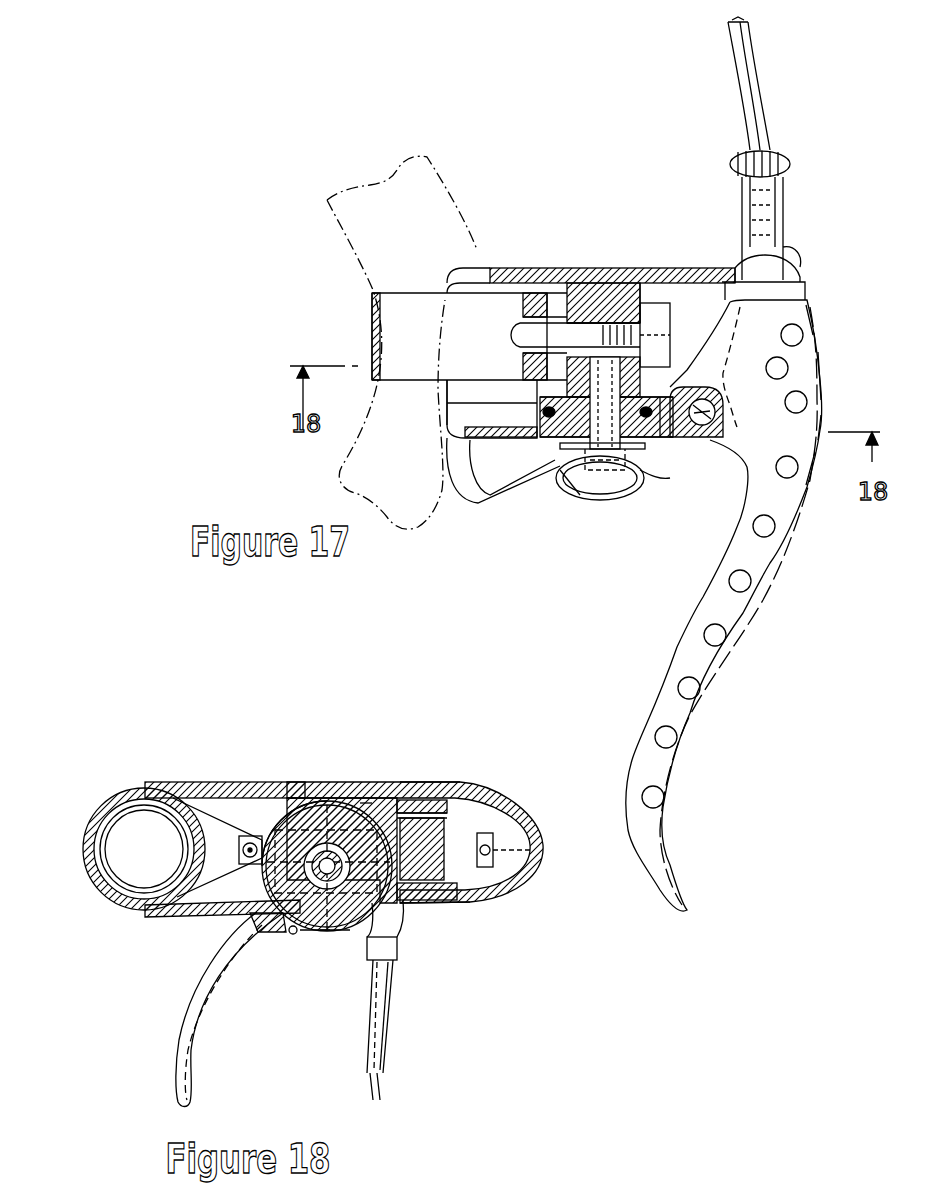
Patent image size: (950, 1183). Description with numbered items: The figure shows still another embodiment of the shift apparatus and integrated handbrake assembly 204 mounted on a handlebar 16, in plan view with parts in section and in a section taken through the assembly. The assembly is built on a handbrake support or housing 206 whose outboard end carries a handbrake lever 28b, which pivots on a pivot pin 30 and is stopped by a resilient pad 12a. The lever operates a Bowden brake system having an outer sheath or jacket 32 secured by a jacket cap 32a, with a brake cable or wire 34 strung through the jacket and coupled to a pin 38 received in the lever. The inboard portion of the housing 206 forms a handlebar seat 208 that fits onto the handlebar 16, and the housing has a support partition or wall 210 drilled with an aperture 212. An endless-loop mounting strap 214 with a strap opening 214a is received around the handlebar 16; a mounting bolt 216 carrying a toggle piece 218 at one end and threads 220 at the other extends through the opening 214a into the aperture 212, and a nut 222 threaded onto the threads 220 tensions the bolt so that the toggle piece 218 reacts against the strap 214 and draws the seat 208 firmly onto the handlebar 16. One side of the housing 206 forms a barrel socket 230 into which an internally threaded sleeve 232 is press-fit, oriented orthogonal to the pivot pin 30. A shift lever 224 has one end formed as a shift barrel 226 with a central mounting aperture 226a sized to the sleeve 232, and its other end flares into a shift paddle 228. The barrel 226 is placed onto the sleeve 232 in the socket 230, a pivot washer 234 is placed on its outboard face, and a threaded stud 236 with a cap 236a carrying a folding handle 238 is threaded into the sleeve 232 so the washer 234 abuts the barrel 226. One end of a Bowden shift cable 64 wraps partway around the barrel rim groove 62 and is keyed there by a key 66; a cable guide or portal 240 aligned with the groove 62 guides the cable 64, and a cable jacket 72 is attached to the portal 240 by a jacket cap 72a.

In FIG. 17, the handlebar 16 is at (446, 188).
In FIG. 18, the handlebar 16 is at (118, 798).
In FIG. 17, the mounting strap 214 is at (372, 312).
In FIG. 18, the mounting strap 214 is at (88, 840).
In FIG. 17, the strap opening 214a is at (512, 335).
In FIG. 17, the internally threaded sleeve 232 is at (540, 364).
In FIG. 18, the internally threaded sleeve 232 is at (330, 848).
In FIG. 17, the threads 220 is at (655, 326).
In FIG. 17, the handbrake support or housing 206 is at (540, 268).
In FIG. 18, the handbrake support or housing 206 is at (248, 784).
In FIG. 17, the handlebar seat 208 is at (482, 270).
In FIG. 18, the handlebar seat 208 is at (163, 784).
In FIG. 17, the mounting bolt 216 is at (535, 298).
In FIG. 18, the mounting bolt 216 is at (240, 838).
In FIG. 17, the support partition or wall 210 is at (592, 290).
In FIG. 18, the support partition or wall 210 is at (318, 806).
In FIG. 17, the shift apparatus and integrated handbrake assembly 204 is at (614, 255).
In FIG. 18, the shift apparatus and integrated handbrake assembly 204 is at (372, 758).
In FIG. 17, the aperture 212 is at (637, 300).
In FIG. 18, the aperture 212 is at (292, 792).
In FIG. 17, the nut 222 is at (688, 270).
In FIG. 18, the nut 222 is at (455, 797).
In FIG. 17, the barrel socket 230 is at (560, 398).
In FIG. 17, the shift lever 224 is at (563, 448).
In FIG. 18, the shift lever 224 is at (275, 935).
In FIG. 17, the barrel rim groove 62 is at (545, 432).
In FIG. 18, the barrel rim groove 62 is at (403, 805).
In FIG. 17, the threaded stud 236 is at (660, 437).
In FIG. 18, the threaded stud 236 is at (364, 806).
In FIG. 17, the cap 236a is at (652, 472).
In FIG. 17, the pivot washer 234 is at (600, 473).
In FIG. 17, the folding handle 238 is at (612, 462).
In FIG. 17, the shift barrel 226 is at (632, 492).
In FIG. 18, the shift barrel 226 is at (335, 932).
In FIG. 17, the mounting aperture 226a is at (573, 498).
In FIG. 18, the mounting aperture 226a is at (325, 936).
In FIG. 17, the Bowden shift cable 64 is at (681, 472).
In FIG. 18, the Bowden shift cable 64 is at (381, 1085).
In FIG. 17, the shift paddle 228 is at (500, 498).
In FIG. 18, the shift paddle 228 is at (182, 1053).
In FIG. 17, the pivot pin 30 is at (708, 440).
In FIG. 18, the pivot pin 30 is at (440, 905).
In FIG. 17, the handbrake lever 28b is at (748, 645).
In FIG. 18, the handbrake lever 28b is at (527, 828).
In FIG. 17, the pin 38 is at (789, 368).
In FIG. 18, the pin 38 is at (496, 870).
In FIG. 17, the resilient pad 12a is at (806, 281).
In FIG. 17, the outer sheath or jacket 32 is at (757, 88).
In FIG. 17, the jacket cap 32a is at (784, 212).
In FIG. 17, the brake cable or wire 34 is at (802, 256).
In FIG. 17, the toggle piece 218 is at (447, 398).
In FIG. 18, the toggle piece 218 is at (232, 905).
In FIG. 18, the key 66 is at (294, 935).
In FIG. 18, the cable guide or portal 240 is at (399, 948).
In FIG. 18, the jacket cap 72a is at (397, 976).
In FIG. 18, the cable jacket 72 is at (387, 1047).